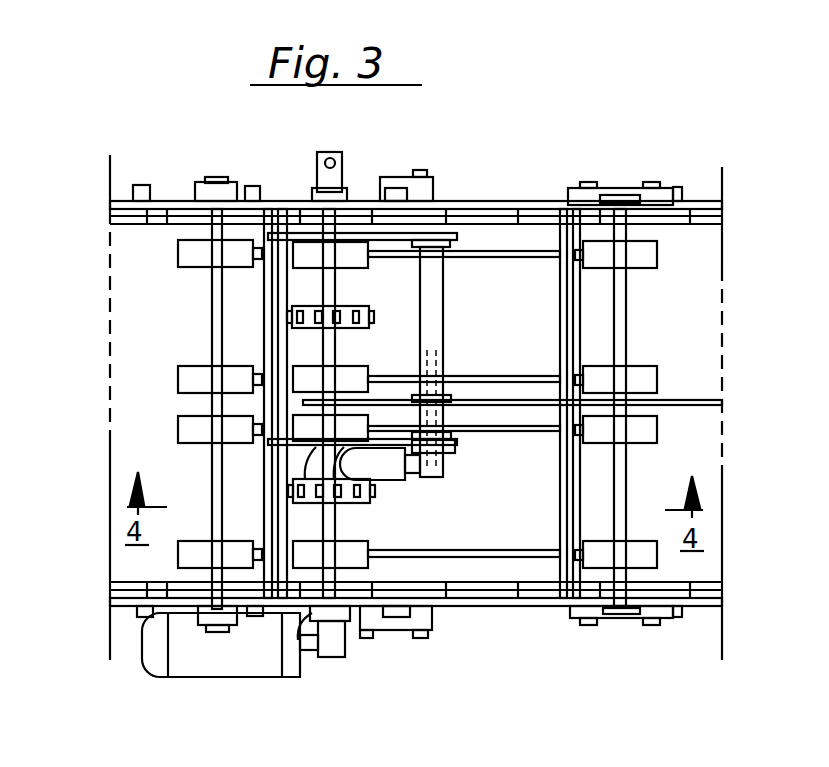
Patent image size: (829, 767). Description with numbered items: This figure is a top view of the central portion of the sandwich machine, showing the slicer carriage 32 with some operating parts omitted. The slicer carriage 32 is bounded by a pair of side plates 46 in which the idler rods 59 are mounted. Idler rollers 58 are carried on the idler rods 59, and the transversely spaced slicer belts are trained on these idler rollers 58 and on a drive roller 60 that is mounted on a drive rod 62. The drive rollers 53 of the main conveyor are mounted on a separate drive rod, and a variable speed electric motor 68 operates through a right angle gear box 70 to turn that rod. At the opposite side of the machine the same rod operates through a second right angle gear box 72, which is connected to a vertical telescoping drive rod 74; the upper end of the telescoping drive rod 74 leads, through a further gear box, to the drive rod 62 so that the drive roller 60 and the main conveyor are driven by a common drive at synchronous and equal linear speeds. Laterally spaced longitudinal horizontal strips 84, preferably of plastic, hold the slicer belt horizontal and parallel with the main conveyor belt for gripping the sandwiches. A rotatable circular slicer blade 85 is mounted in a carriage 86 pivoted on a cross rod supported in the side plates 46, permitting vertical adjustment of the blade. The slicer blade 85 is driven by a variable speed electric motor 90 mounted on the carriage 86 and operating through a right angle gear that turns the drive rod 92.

The slicer carriage 32 is at (146, 237).
The side plates 46 is at (500, 201).
The drive rollers 53 is at (362, 507).
The idler rollers 58 is at (193, 267).
The idler rods 59 is at (625, 500).
The drive roller 60 is at (357, 328).
The drive rod 62 is at (335, 290).
The variable speed electric motor 68 is at (397, 478).
The right angle gear box 70 is at (335, 658).
The second right angle gear box 72 is at (343, 163).
The vertical telescoping drive rod 74 is at (315, 163).
The longitudinal horizontal strips 84 is at (522, 297).
The circular slicer blade 85 is at (518, 403).
The carriage 86 is at (457, 445).
The variable speed electric motor 90 is at (217, 670).
The drive rod 92 is at (440, 375).